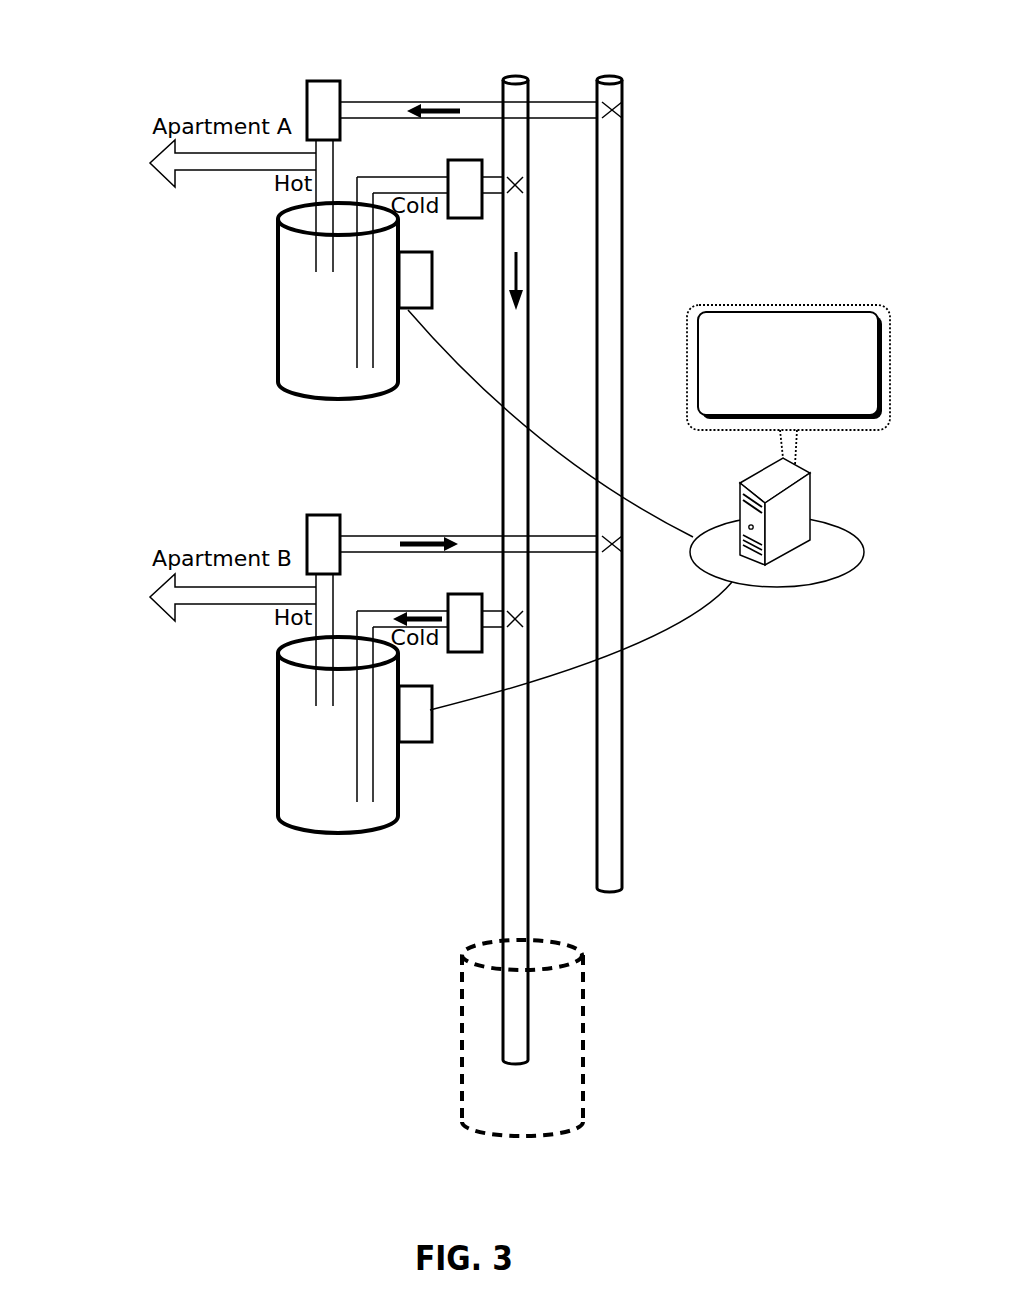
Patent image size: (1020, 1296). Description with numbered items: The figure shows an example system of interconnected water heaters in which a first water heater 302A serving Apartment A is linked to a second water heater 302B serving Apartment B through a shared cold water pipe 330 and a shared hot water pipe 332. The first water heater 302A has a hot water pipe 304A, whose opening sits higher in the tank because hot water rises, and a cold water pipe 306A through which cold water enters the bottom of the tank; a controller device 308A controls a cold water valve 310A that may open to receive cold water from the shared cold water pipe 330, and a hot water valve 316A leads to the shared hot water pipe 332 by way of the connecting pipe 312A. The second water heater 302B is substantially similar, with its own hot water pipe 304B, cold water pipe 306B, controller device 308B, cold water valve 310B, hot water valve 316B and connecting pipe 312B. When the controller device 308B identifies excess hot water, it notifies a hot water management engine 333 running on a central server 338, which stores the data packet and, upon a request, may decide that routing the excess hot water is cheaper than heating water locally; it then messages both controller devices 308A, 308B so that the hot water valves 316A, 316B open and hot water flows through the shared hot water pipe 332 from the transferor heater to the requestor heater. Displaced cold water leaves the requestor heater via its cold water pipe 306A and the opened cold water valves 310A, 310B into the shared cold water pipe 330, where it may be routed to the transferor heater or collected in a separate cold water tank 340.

The first water heater 302A is at (278, 307).
The hot water pipe 304A is at (315, 250).
The cold water pipe 306A is at (355, 355).
The controller device 308A is at (408, 310).
The cold water valve 310A is at (470, 160).
The hot water pipe to shared hot line (apartment A) 312A is at (482, 102).
The hot water valve 316A is at (307, 113).
The second water heater 302B is at (278, 741).
The hot water pipe 304B is at (315, 684).
The cold water pipe 306B is at (355, 789).
The controller device 308B is at (418, 743).
The cold water valve 310B is at (470, 594).
The hot water pipe to shared hot line (apartment B) 312B is at (482, 536).
The hot water valve 316B is at (307, 547).
The shared cold water pipe 330 is at (502, 840).
The shared hot water pipe 332 is at (620, 847).
The hot water management engine 333 is at (788, 385).
The central server 338 is at (810, 475).
The cold water tank 340 is at (462, 1043).